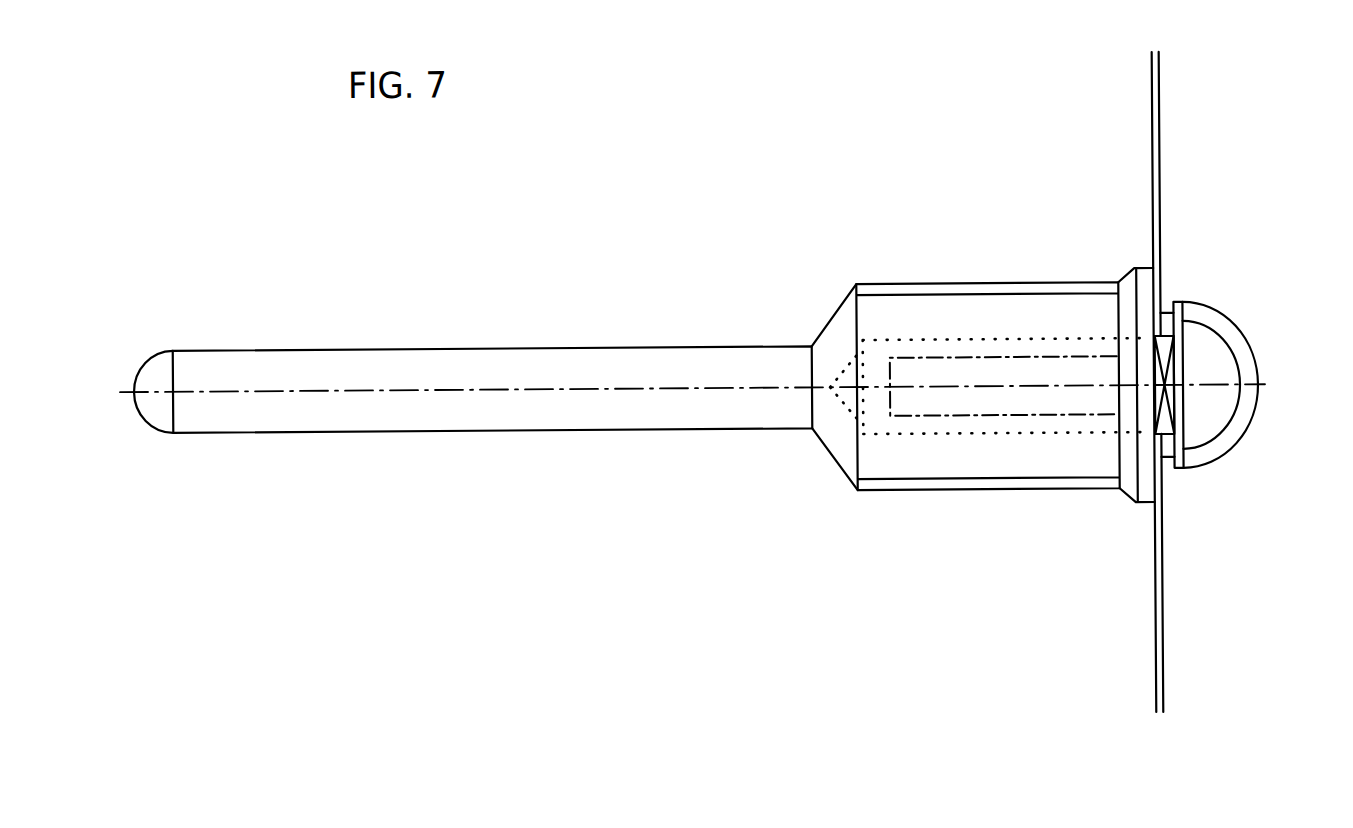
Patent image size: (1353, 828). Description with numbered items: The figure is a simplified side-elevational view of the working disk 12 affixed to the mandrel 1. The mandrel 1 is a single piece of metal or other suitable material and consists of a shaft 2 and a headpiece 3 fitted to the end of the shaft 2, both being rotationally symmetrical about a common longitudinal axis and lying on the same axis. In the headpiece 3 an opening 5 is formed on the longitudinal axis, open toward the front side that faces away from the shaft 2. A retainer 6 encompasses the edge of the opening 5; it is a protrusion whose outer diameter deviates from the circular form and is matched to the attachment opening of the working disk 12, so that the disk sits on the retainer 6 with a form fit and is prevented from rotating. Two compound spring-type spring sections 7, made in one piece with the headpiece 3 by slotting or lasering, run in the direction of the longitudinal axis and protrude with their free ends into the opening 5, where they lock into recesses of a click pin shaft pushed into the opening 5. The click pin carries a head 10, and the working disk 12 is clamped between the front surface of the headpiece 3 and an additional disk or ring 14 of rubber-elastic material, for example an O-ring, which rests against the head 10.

The mandrel 1 is at (562, 293).
The shaft 2 is at (362, 410).
The headpiece 3 is at (1026, 457).
The opening 5 is at (967, 337).
The retainer 6 is at (1173, 358).
The spring section 7 is at (972, 399).
The head 10 is at (1217, 322).
The working disk 12 is at (1159, 157).
The ring 14 is at (1168, 445).